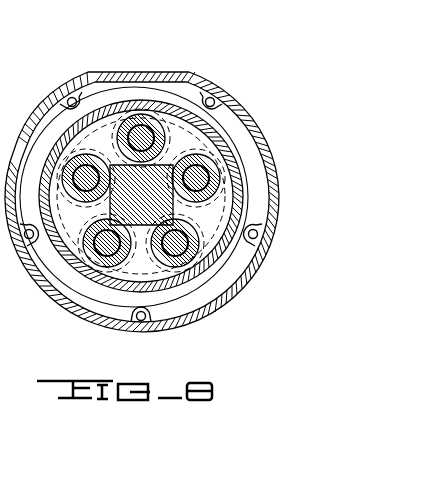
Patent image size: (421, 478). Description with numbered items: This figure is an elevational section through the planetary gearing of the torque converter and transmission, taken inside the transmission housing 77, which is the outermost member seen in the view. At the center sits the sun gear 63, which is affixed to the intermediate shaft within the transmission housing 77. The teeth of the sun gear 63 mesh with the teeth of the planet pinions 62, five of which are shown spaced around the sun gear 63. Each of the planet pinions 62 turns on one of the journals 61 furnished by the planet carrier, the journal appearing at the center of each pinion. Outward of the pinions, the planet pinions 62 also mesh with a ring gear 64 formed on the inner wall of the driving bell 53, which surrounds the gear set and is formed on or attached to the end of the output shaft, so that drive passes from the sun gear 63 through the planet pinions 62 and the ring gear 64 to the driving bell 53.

The driving bell 53 is at (212, 264).
The journals 61 is at (208, 171).
The planet pinions 62 is at (196, 160).
The sun gear 63 is at (168, 165).
The ring gear 64 is at (131, 112).
The transmission housing 77 is at (222, 305).